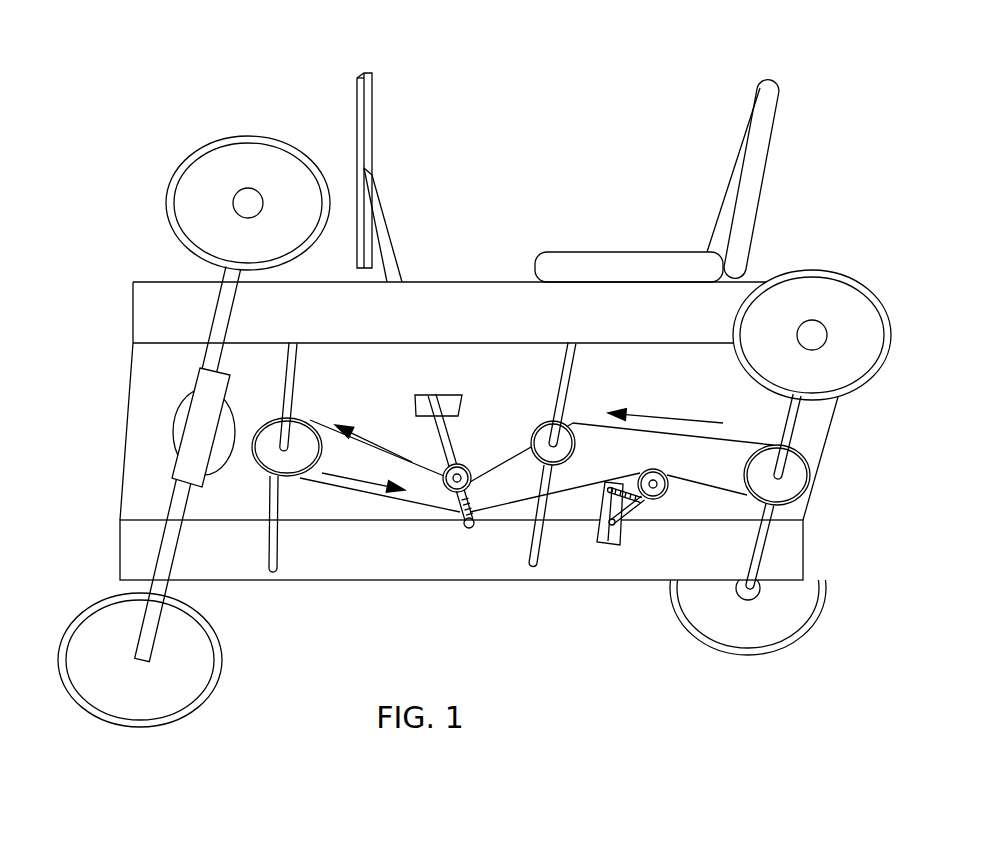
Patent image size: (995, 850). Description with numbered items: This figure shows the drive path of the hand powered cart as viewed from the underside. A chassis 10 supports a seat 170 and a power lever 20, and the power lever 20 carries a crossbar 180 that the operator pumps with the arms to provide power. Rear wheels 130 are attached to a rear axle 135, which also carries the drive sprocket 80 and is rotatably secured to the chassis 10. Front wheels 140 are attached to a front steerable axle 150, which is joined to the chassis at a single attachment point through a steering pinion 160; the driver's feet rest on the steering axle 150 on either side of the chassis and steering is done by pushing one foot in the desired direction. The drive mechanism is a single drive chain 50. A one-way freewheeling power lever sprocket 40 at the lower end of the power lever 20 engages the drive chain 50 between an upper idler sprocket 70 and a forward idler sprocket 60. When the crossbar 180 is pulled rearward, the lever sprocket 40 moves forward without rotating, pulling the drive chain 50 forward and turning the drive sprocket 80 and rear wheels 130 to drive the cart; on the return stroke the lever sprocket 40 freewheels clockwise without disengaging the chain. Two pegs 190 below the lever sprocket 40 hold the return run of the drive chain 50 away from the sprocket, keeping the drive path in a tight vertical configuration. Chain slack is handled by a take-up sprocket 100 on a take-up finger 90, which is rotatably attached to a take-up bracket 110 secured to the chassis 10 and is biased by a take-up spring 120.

The chassis 10 is at (458, 283).
The power lever 20 is at (390, 208).
The power lever sprocket 40 is at (483, 463).
The drive chain 50 is at (422, 507).
The forward idler sprocket 60 is at (257, 470).
The upper idler sprocket 70 is at (580, 420).
The drive sprocket 80 is at (812, 477).
The take-up finger 90 is at (622, 508).
The take-up sprocket 100 is at (643, 468).
The take-up bracket 110 is at (590, 530).
The take-up spring 120 is at (650, 500).
The rear wheels 130 is at (873, 287).
The rear axle 135 is at (790, 440).
The front wheels 140 is at (188, 146).
The front steerable axle 150 is at (153, 547).
The steering pinion 160 is at (172, 412).
The seat 170 is at (677, 238).
The power lever crossbar 180 is at (380, 92).
The power lever pegs 190 is at (453, 520).